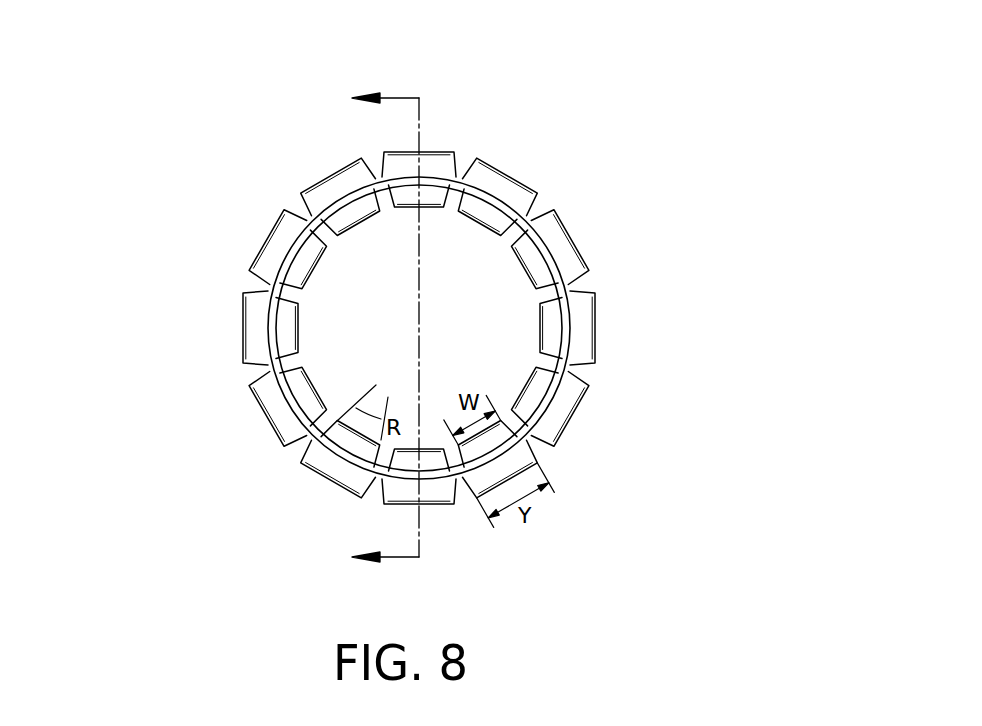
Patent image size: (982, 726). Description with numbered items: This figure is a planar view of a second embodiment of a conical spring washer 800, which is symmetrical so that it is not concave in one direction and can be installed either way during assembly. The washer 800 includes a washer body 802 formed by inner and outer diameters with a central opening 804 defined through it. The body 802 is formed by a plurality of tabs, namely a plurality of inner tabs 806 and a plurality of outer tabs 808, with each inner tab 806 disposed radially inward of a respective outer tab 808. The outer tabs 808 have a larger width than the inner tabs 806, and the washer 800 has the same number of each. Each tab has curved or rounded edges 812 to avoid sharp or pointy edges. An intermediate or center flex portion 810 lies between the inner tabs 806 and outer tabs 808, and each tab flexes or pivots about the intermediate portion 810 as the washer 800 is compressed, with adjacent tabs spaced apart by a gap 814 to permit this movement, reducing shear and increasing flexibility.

The conical spring washer 800 is at (188, 140).
The washer body 802 is at (275, 245).
The central opening 804 is at (508, 370).
The inner tabs 806 is at (400, 200).
The outer tabs 808 is at (330, 468).
The intermediate flex portion 810 is at (456, 182).
The curved or rounded edges 812 is at (558, 205).
The gap 814 is at (592, 283).